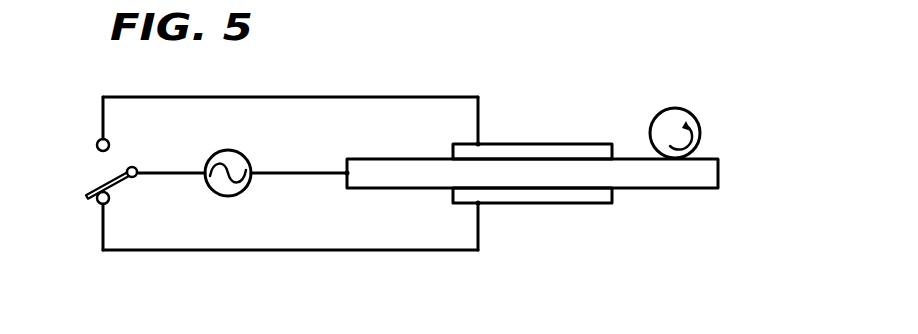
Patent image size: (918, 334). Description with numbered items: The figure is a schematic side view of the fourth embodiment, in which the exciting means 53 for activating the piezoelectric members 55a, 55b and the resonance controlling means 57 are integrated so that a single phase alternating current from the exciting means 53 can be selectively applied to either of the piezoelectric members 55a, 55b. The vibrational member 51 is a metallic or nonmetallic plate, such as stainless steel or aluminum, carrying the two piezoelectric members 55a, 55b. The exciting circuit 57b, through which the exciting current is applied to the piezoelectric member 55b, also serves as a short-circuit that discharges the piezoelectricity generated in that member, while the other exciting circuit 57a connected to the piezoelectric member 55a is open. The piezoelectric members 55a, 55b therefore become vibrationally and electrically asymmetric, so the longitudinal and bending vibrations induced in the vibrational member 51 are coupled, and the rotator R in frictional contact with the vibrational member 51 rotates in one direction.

The vibrational member 51 is at (660, 173).
The exciting means 53 is at (237, 159).
The piezoelectric member 55a is at (539, 150).
The piezoelectric member 55b is at (539, 195).
The resonance controlling means 57 is at (93, 170).
The exciting circuit 57a is at (348, 97).
The exciting circuit 57b is at (339, 250).
The rotator R is at (700, 128).